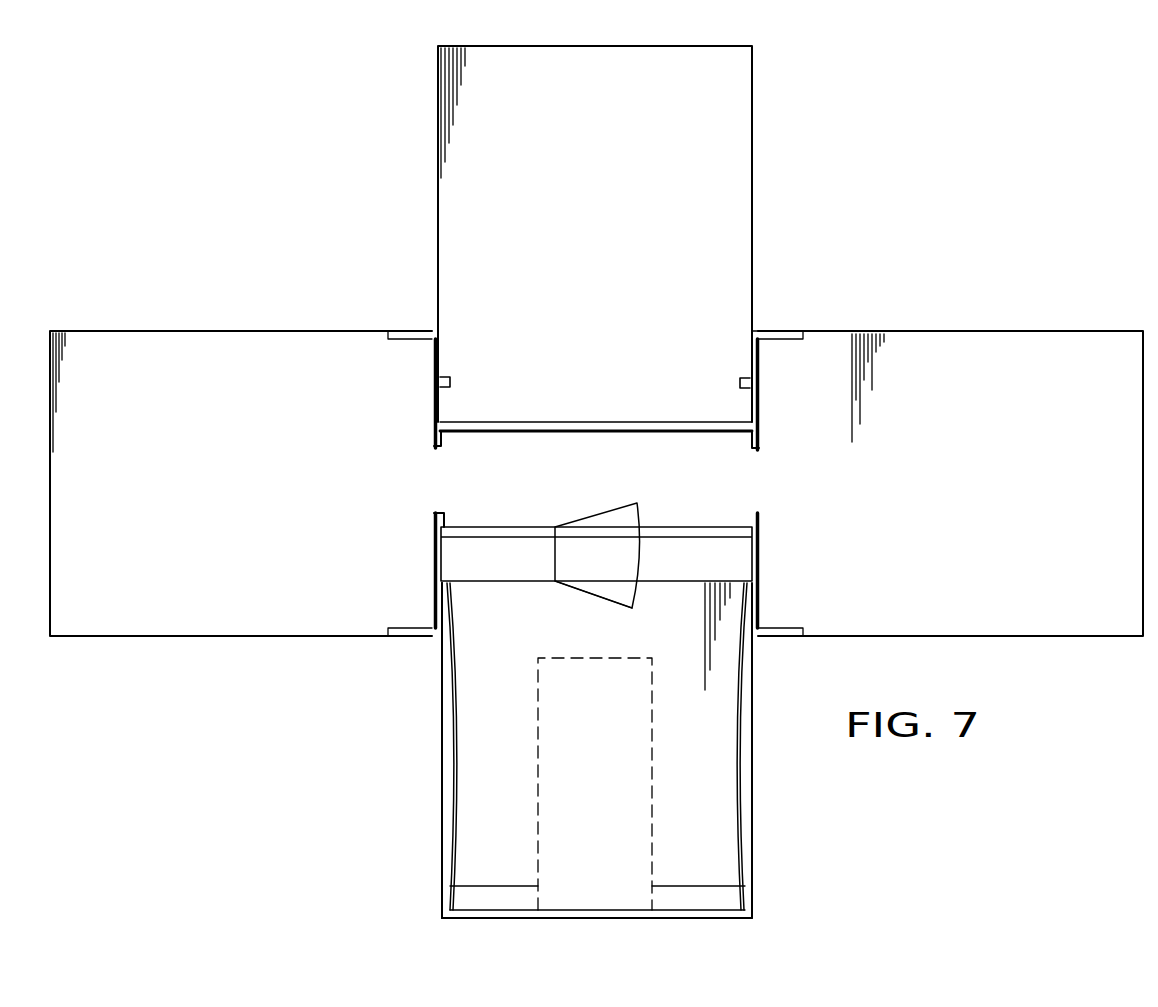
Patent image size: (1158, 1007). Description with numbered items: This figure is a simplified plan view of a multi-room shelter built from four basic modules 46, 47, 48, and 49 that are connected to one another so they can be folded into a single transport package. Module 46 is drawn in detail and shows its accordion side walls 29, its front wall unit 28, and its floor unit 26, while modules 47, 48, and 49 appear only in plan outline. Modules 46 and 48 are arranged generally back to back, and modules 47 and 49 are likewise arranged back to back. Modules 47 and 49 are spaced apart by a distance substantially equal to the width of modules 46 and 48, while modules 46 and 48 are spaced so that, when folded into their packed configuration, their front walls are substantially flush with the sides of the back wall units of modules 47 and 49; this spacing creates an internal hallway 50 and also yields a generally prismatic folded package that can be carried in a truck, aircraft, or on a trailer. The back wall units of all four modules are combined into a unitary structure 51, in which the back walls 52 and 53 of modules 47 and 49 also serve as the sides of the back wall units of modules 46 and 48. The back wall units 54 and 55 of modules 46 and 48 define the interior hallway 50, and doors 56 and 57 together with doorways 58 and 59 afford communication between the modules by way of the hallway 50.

The floor unit 26 is at (487, 820).
The front wall unit 28 is at (740, 918).
The accordion side walls 29 is at (440, 700).
The module 46 is at (440, 792).
The module 47 is at (243, 330).
The module 48 is at (755, 254).
The module 49 is at (1056, 331).
The hallway 50 is at (560, 455).
The unitary structure 51 is at (764, 322).
The back wall 52 is at (432, 399).
The back wall 53 is at (760, 397).
The back wall unit 54 is at (692, 527).
The back wall unit 55 is at (650, 421).
The door 56 is at (597, 508).
The door 57 is at (570, 588).
The doorway 58 is at (435, 448).
The doorway 59 is at (758, 451).